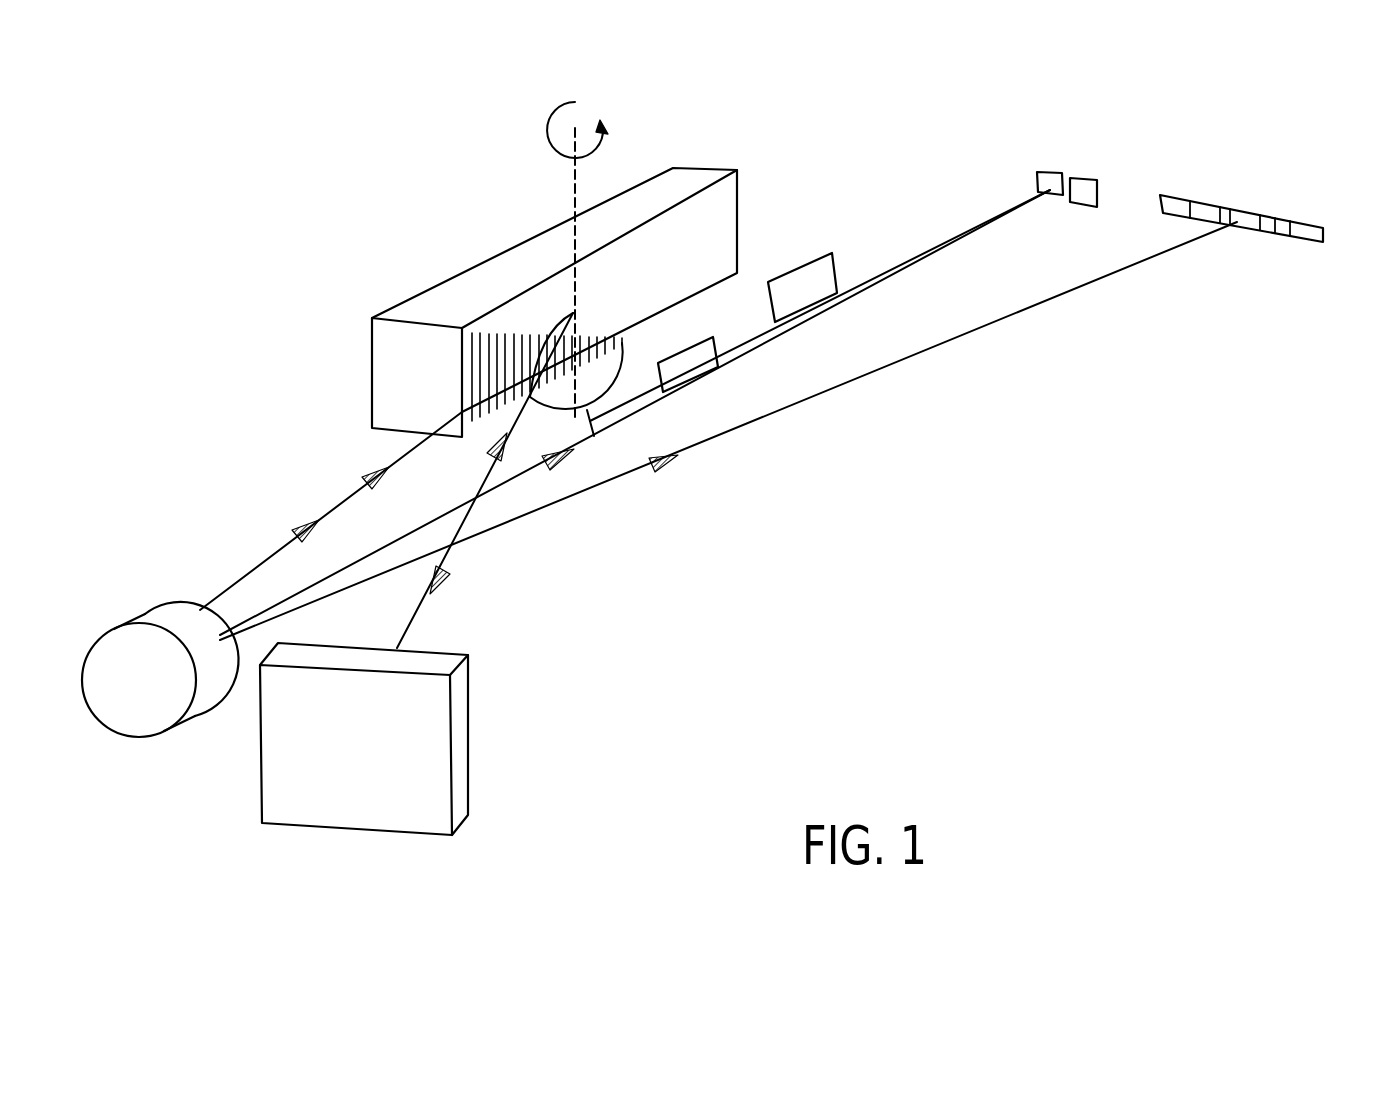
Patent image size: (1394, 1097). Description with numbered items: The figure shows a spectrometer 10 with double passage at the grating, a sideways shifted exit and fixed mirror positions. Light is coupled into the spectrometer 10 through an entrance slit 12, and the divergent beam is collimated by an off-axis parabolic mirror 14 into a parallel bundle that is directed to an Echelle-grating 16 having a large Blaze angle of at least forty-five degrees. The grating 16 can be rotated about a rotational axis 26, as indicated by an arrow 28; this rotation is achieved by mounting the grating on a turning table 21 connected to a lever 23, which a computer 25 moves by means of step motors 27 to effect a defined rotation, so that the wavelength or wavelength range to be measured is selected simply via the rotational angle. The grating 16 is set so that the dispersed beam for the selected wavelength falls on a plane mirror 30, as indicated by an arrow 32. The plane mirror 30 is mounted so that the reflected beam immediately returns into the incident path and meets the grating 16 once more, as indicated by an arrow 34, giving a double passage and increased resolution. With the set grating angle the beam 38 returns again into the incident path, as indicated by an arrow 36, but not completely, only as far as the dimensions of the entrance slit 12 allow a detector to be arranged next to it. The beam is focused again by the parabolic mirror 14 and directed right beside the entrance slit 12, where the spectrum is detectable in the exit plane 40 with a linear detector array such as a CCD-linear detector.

The spectrometer 10 is at (378, 188).
The entrance slit 12 is at (1087, 192).
The off-axis parabolic mirror 14 is at (175, 613).
The Echelle-grating 16 is at (725, 225).
The turning table 21 is at (617, 363).
The lever 23 is at (590, 422).
The computer 25 is at (838, 263).
The rotational axis 26 is at (577, 198).
The step motors 27 is at (718, 349).
The arrow 28 is at (575, 101).
The plane mirror 30 is at (432, 752).
The arrow 32 is at (455, 582).
The arrow 34 is at (513, 458).
The arrow 36 is at (300, 524).
The beam 38 is at (364, 477).
The exit plane 40 is at (1303, 221).